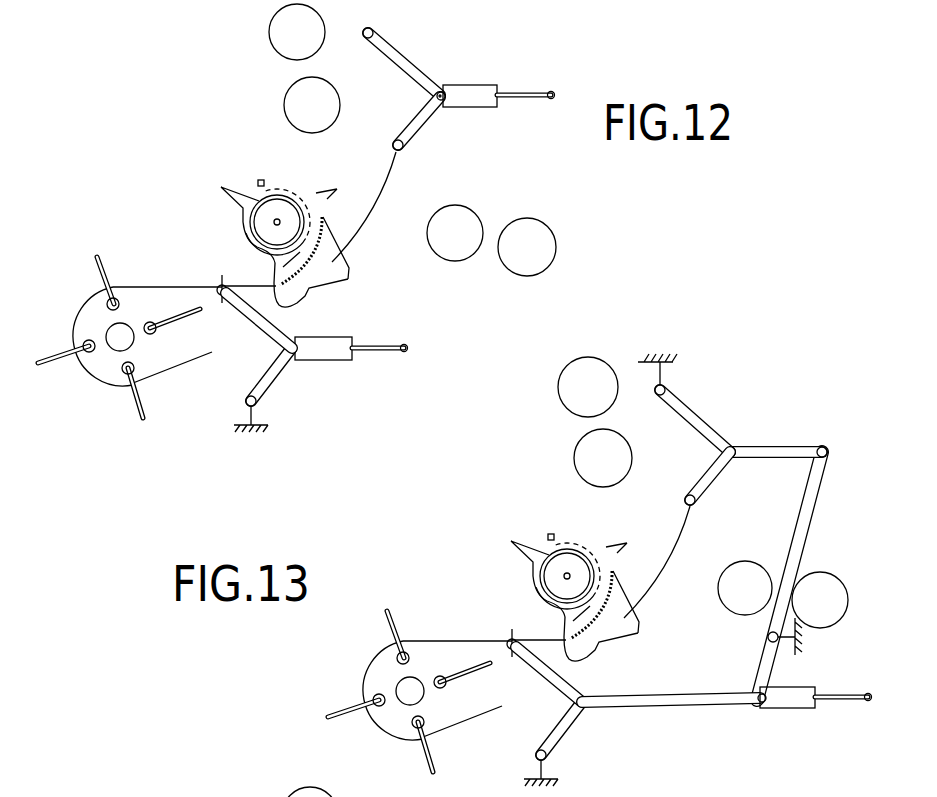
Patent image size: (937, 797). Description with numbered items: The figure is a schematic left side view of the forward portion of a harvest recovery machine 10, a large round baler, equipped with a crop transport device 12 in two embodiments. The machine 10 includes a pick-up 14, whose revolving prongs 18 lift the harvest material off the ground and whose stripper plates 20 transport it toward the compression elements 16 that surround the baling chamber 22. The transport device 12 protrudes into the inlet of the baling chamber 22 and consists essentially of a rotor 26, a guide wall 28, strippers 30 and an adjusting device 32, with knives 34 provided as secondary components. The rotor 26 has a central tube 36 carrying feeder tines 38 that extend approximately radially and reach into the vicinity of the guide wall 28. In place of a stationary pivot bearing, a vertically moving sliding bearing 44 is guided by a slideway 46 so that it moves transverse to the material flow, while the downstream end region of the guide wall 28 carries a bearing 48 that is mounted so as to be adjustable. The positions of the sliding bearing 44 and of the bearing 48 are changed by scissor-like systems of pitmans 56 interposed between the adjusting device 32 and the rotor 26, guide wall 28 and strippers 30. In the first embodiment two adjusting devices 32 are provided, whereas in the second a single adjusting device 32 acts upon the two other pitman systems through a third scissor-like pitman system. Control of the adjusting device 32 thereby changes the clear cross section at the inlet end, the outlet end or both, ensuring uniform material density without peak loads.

In FIG. 12, the harvest recovery machine 10 is at (220, 283).
In FIG. 13, the harvest recovery machine 10 is at (586, 632).
In FIG. 12, the crop transport device 12 is at (220, 295).
In FIG. 13, the crop transport device 12 is at (586, 632).
In FIG. 12, the pick-up 14 is at (172, 394).
In FIG. 13, the pick-up 14 is at (460, 737).
In FIG. 12, the compression elements 16 is at (520, 222).
In FIG. 13, the compression elements 16 is at (580, 443).
In FIG. 12, the prongs 18 is at (130, 404).
In FIG. 13, the prongs 18 is at (342, 702).
In FIG. 12, the stripper plates 20 is at (116, 285).
In FIG. 13, the stripper plates 20 is at (415, 637).
In FIG. 12, the baling chamber 22 is at (495, 161).
In FIG. 13, the baling chamber 22 is at (770, 507).
In FIG. 12, the rotor 26 is at (277, 215).
In FIG. 13, the rotor 26 is at (578, 579).
In FIG. 12, the guide wall 28 is at (353, 238).
In FIG. 13, the guide wall 28 is at (678, 537).
In FIG. 12, the strippers 30 is at (278, 268).
In FIG. 13, the strippers 30 is at (604, 600).
In FIG. 12, the adjusting device 32 is at (487, 83).
In FIG. 13, the adjusting device 32 is at (788, 710).
In FIG. 12, the knives 34 is at (348, 276).
In FIG. 13, the knives 34 is at (640, 628).
In FIG. 12, the tube 36 is at (260, 182).
In FIG. 13, the tube 36 is at (556, 537).
In FIG. 12, the feeder tines 38 is at (228, 186).
In FIG. 13, the feeder tines 38 is at (518, 537).
In FIG. 12, the sliding bearing 44 is at (217, 294).
In FIG. 13, the sliding bearing 44 is at (507, 660).
In FIG. 12, the slideway 46 is at (216, 279).
In FIG. 13, the slideway 46 is at (508, 635).
In FIG. 12, the bearing 48 is at (400, 140).
In FIG. 13, the bearing 48 is at (687, 497).
In FIG. 12, the pitmans 56 is at (385, 32).
In FIG. 13, the pitmans 56 is at (693, 404).